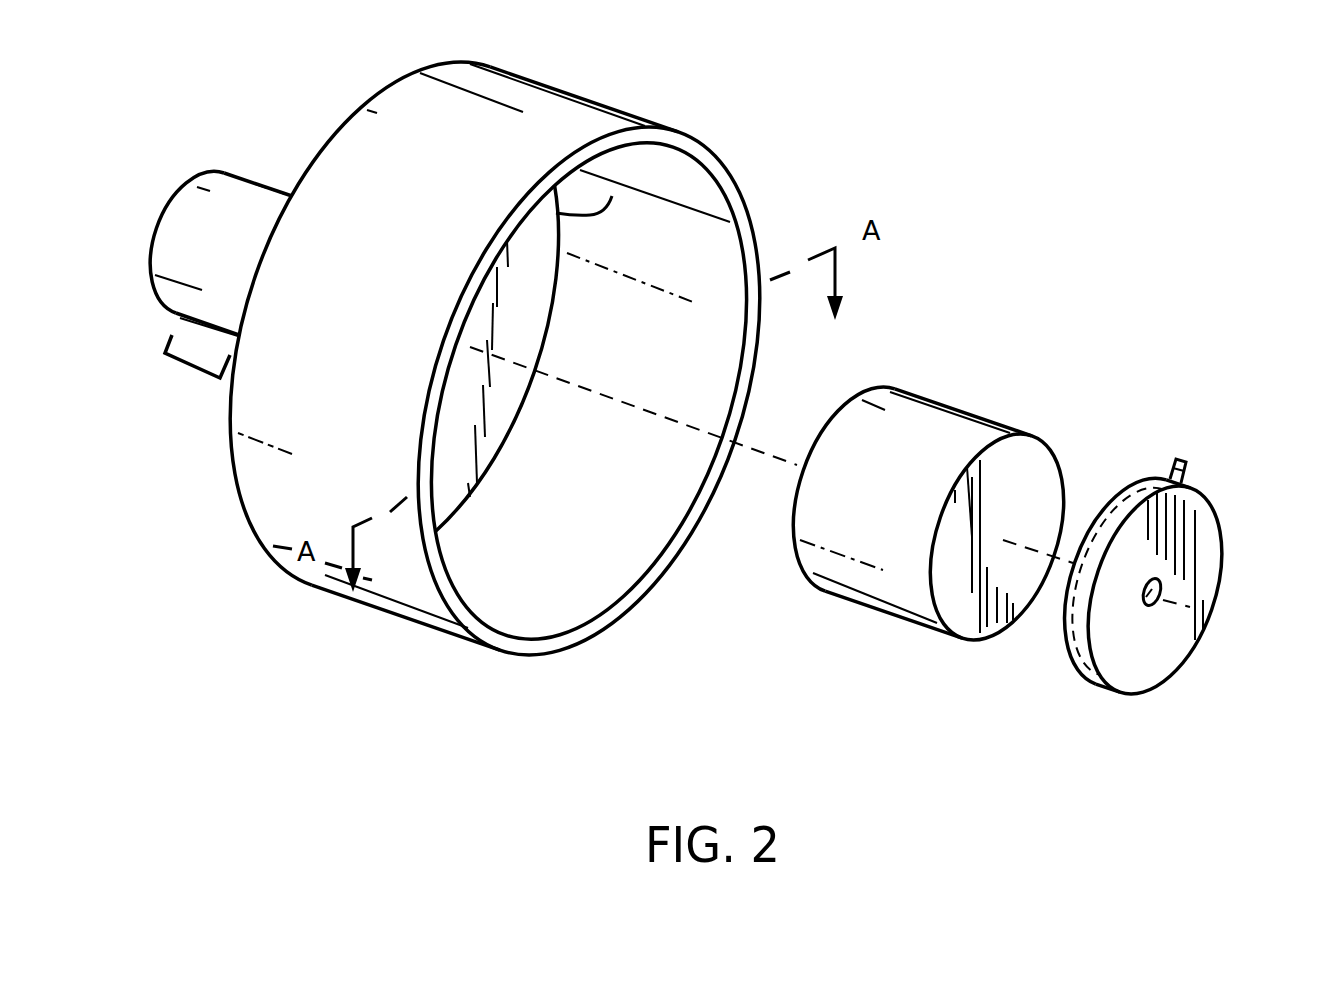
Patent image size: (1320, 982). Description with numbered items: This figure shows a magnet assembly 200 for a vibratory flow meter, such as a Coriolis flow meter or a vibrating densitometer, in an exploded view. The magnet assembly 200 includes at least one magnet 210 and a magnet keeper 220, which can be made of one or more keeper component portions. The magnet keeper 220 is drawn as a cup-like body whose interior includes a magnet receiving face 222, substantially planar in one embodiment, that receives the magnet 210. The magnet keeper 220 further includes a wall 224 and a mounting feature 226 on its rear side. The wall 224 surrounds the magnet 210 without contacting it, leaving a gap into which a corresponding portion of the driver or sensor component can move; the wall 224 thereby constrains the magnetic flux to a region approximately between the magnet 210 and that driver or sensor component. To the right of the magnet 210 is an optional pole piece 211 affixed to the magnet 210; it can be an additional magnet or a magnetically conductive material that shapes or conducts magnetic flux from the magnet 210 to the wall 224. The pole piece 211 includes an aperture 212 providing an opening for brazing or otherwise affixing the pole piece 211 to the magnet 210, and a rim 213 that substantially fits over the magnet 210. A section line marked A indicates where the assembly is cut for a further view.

The magnet assembly 200 is at (1002, 156).
The magnet 210 is at (1060, 476).
The pole piece 211 is at (1217, 522).
The aperture 212 is at (1168, 590).
The rim 213 is at (1181, 456).
The magnet keeper 220 is at (357, 610).
The magnet receiving face 222 is at (612, 196).
The wall 224 is at (757, 226).
The mounting feature 226 is at (187, 369).